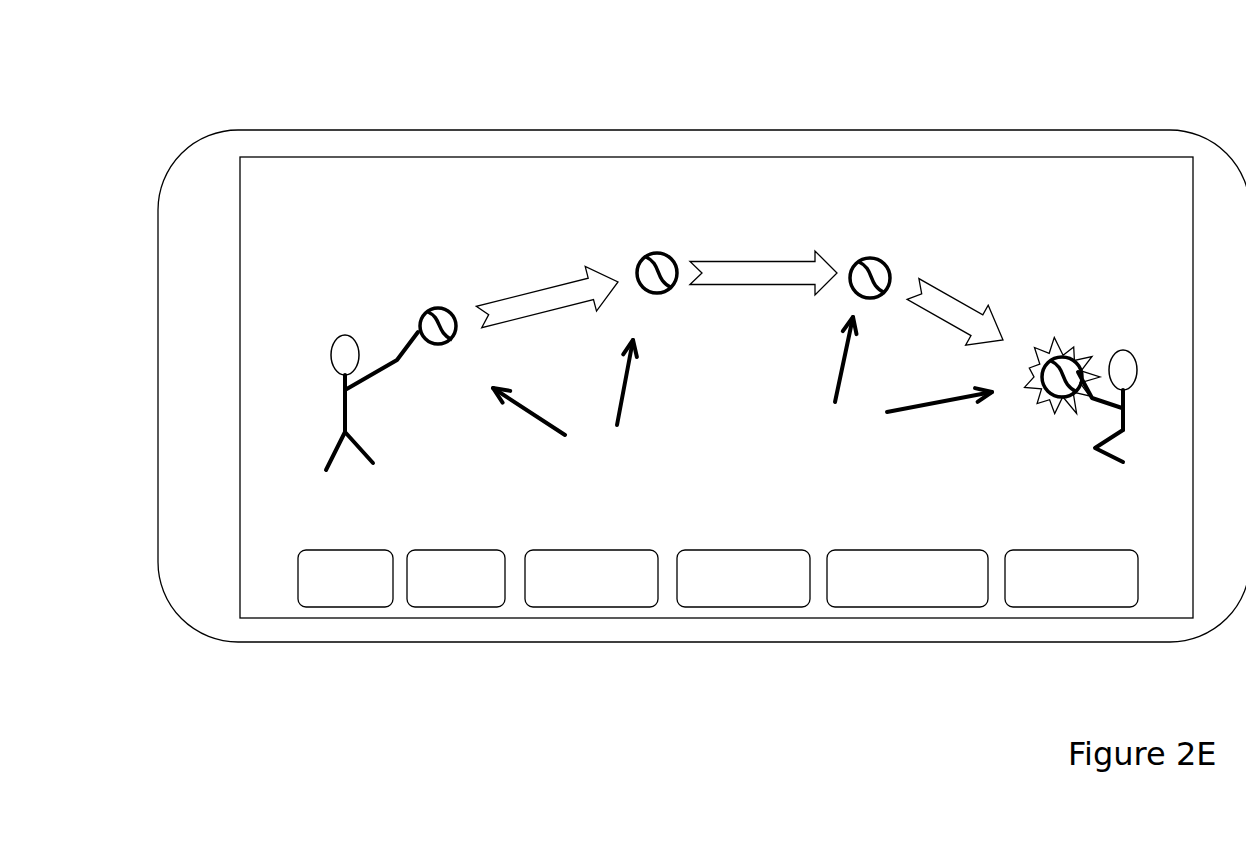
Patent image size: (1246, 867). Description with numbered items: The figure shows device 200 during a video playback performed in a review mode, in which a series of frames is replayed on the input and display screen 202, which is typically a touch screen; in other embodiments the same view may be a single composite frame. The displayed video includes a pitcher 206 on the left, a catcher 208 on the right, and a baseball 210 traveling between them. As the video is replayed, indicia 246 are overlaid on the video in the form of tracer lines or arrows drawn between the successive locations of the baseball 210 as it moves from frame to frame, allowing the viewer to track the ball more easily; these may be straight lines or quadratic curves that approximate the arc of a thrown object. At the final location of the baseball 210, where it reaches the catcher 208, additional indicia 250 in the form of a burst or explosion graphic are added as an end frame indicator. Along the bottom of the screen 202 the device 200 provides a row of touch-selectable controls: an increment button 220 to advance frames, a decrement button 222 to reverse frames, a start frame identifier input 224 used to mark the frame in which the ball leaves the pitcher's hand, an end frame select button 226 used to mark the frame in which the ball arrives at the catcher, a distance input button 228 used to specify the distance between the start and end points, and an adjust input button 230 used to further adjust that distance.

The device 200 is at (702, 336).
The input and display screen 202 is at (524, 218).
The pitcher 206 is at (619, 375).
The catcher 208 is at (1080, 370).
The baseball 210 is at (712, 305).
The increment button 220 is at (310, 622).
The decrement button 222 is at (421, 622).
The start frame identifier input 224 is at (569, 622).
The end frame select button 226 is at (709, 622).
The distance input button 228 is at (883, 622).
The adjust input button 230 is at (1043, 622).
The indicia 246 is at (706, 268).
The indicia 250 is at (1027, 411).